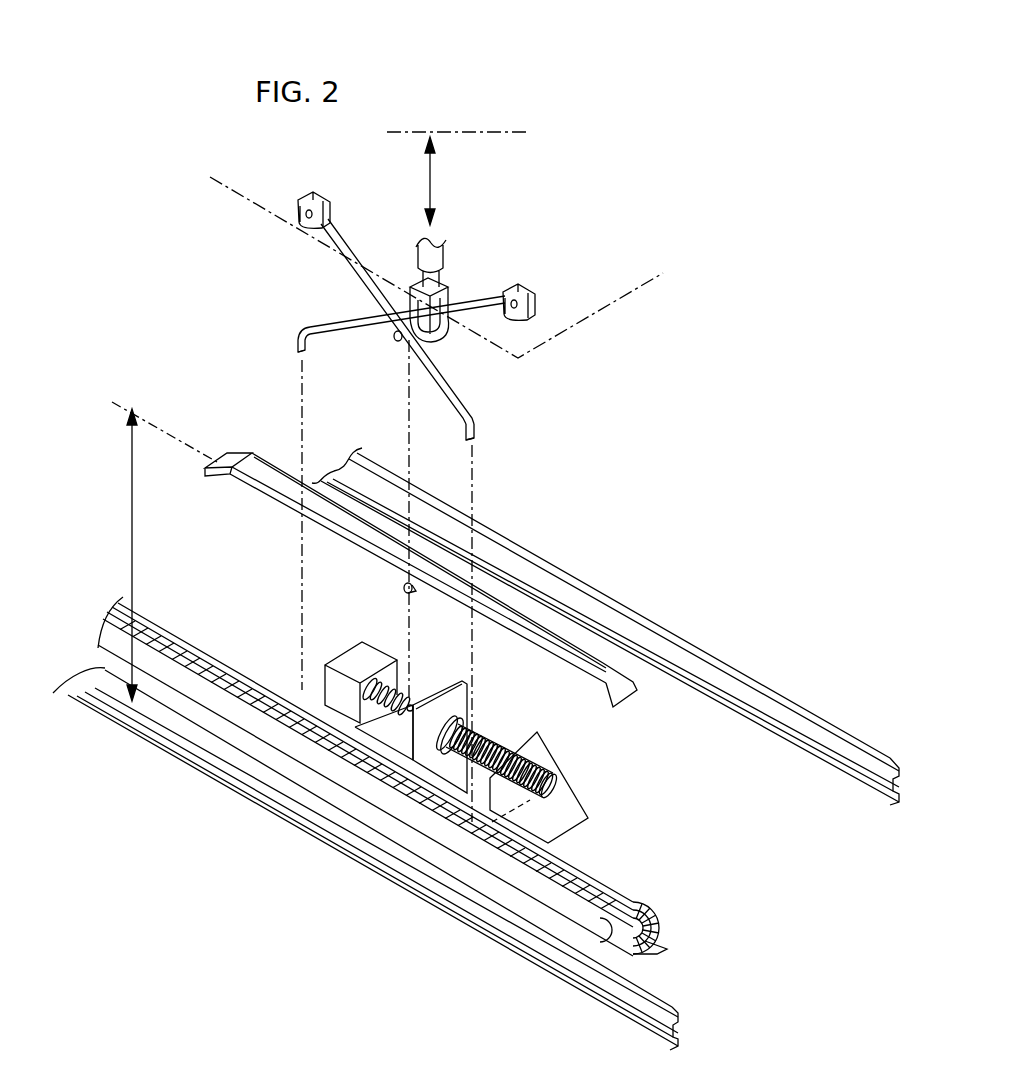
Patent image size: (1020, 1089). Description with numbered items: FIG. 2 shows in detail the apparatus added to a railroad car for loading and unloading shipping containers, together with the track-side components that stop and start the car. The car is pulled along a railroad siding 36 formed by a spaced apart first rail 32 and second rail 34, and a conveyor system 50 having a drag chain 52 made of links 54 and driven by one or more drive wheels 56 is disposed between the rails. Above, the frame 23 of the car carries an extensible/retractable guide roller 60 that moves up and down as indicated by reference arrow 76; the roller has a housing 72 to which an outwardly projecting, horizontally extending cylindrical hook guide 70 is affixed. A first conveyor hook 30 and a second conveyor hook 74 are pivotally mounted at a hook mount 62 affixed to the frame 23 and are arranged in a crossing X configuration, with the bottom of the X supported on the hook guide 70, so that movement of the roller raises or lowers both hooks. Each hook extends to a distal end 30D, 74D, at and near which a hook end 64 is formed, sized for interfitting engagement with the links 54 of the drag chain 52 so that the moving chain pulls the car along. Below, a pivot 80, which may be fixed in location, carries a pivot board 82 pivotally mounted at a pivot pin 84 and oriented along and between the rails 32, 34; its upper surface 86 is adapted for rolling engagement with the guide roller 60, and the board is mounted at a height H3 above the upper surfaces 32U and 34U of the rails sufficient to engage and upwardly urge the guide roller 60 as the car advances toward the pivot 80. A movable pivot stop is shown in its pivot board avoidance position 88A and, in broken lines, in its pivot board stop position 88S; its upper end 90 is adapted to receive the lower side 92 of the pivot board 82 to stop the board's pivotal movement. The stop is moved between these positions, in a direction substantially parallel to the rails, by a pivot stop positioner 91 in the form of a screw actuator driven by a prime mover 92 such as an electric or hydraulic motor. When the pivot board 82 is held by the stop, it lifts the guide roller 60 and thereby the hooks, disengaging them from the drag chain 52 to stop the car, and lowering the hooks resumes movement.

The frame 23 is at (495, 132).
The reference arrow 76 is at (430, 178).
The hook mount 62 is at (315, 203).
The first conveyor hook 30 is at (340, 228).
The distal end of first conveyor hook 30D is at (472, 442).
The housing 72 is at (448, 272).
The second conveyor hook 74 is at (346, 320).
The distal end of second conveyor hook 74D is at (301, 356).
The hook end 64 is at (297, 343).
The hook guide 70 is at (394, 340).
The extensible/retractable guide roller 60 is at (448, 330).
The height H3 is at (130, 528).
The upper surface of pivot board 86 is at (282, 486).
The pivot board 82 is at (553, 647).
The pivot pin 84 is at (402, 590).
The prime mover 92 is at (369, 671).
The pivot 80 is at (406, 741).
The pivot board avoidance position 88A is at (470, 707).
The upper end of pivot stop 90 is at (522, 728).
The pivot board stop position 88S is at (565, 767).
The pivot stop positioner 91 is at (565, 803).
The second rail 34 is at (818, 757).
The upper surface of second rail 34U is at (806, 700).
The railroad siding 36 is at (765, 925).
The first rail 32 is at (680, 1008).
The upper surface of first rail 32U is at (658, 1003).
The conveyor system 50 is at (541, 1032).
The links 54 is at (523, 866).
The drag chain 52 is at (558, 897).
The drive wheel 56 is at (597, 917).